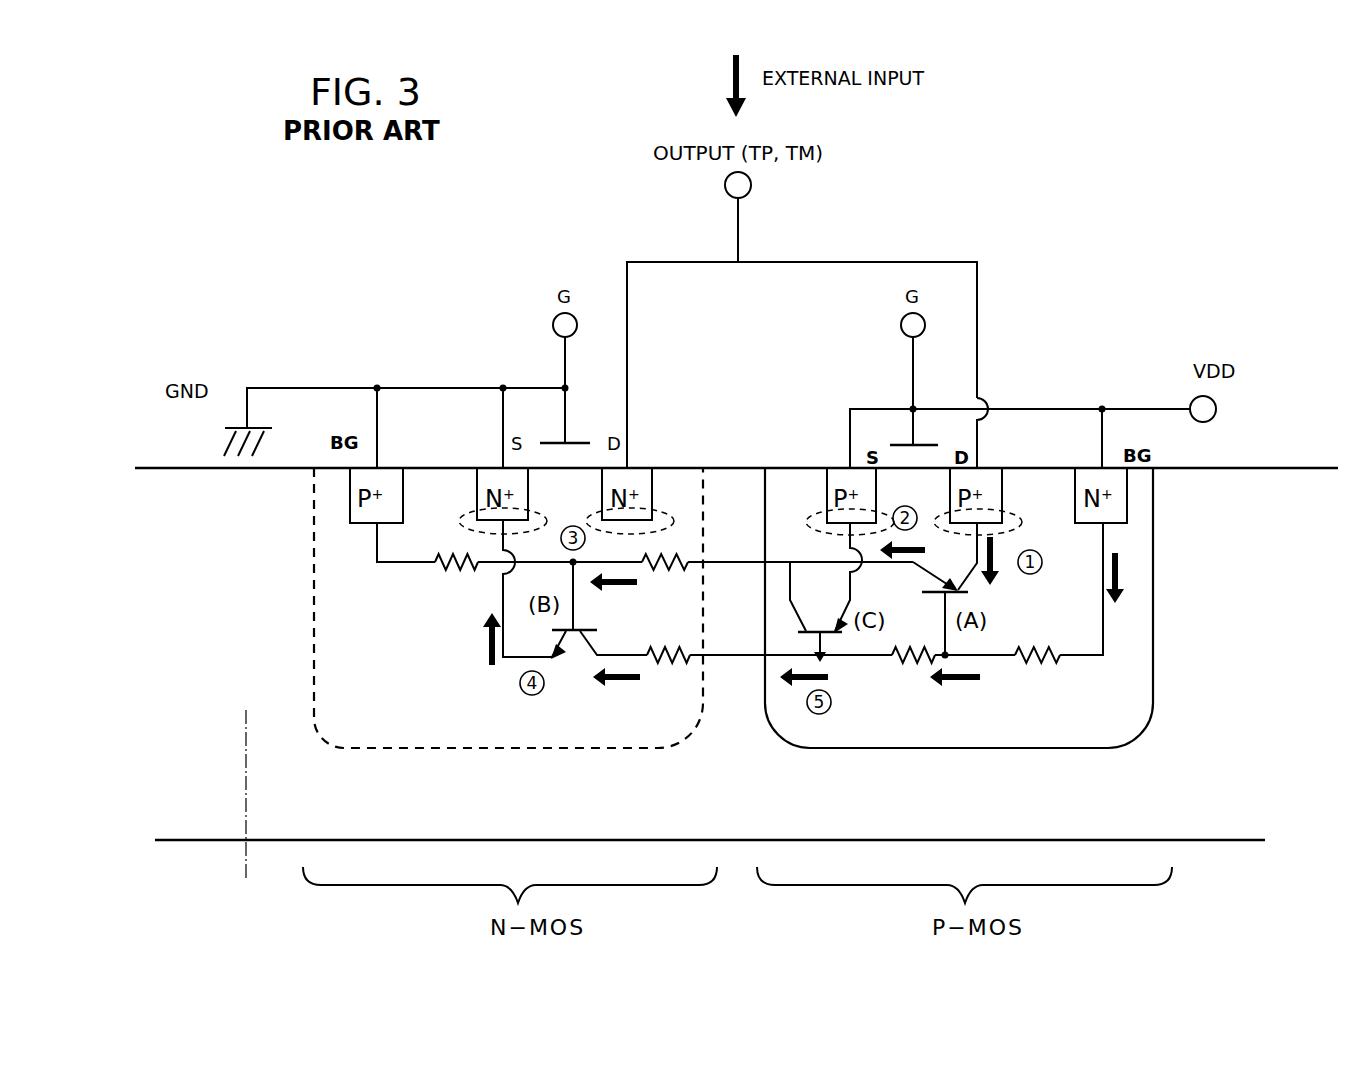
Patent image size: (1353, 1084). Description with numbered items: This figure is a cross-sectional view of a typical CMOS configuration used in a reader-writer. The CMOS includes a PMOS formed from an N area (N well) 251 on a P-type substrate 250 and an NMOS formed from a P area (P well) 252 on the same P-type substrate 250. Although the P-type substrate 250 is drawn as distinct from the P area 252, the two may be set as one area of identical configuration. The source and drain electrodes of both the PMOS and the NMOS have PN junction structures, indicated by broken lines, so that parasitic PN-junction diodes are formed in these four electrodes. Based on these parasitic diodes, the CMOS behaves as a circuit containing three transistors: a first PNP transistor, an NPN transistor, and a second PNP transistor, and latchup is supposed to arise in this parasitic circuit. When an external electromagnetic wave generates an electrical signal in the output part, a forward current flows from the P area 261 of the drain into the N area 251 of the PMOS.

The P-type substrate (Psub) 250 is at (218, 764).
The N area (Nwell) 251 is at (1155, 667).
The P area (Pwell) 252 is at (314, 613).
The P area of the drain D 261 is at (992, 470).